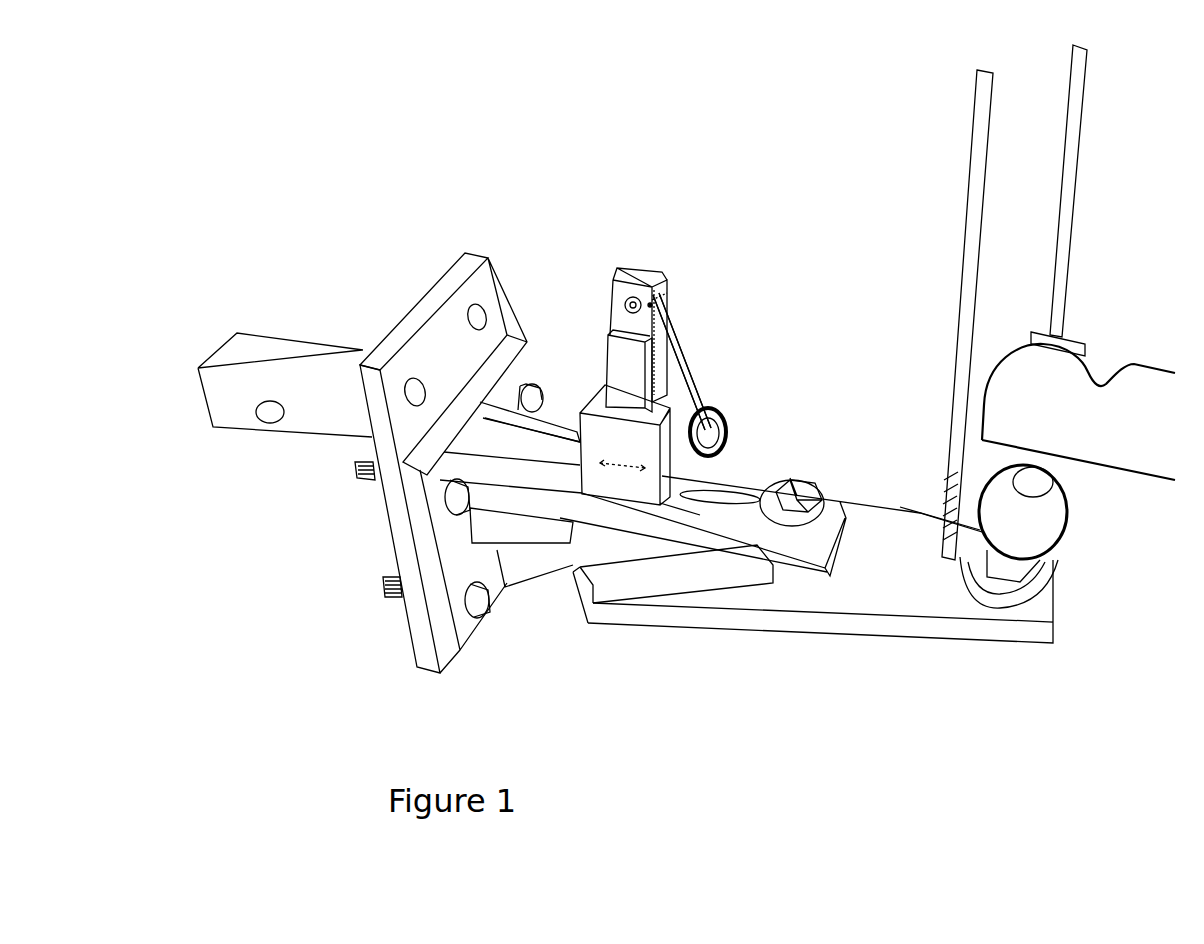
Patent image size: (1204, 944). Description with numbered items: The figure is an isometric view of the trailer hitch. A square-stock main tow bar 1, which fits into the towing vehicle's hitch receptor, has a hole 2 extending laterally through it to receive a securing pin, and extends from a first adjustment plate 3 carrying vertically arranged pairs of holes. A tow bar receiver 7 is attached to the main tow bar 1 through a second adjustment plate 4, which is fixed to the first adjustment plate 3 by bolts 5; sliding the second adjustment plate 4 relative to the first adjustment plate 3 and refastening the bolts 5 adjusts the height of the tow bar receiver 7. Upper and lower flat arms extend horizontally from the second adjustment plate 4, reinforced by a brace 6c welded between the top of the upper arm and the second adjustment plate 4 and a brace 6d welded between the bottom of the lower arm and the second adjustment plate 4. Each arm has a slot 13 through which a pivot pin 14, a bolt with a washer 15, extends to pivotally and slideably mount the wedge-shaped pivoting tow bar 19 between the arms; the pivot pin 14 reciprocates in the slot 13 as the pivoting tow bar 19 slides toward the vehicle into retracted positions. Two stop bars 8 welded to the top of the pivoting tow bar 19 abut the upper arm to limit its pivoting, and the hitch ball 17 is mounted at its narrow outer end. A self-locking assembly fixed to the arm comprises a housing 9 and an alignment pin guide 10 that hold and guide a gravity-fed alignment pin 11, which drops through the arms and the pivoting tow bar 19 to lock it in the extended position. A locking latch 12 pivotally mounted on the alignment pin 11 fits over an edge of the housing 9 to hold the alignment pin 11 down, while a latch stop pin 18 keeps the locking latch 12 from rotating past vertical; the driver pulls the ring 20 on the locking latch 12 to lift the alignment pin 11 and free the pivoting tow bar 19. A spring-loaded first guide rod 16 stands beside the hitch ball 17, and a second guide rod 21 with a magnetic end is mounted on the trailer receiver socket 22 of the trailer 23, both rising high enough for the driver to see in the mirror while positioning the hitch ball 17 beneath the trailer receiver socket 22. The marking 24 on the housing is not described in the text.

The main tow bar 1 is at (254, 330).
The hole 2 is at (270, 420).
The first adjustment plate 3 is at (472, 248).
The second adjustment plate 4 is at (515, 333).
The bolts 5 is at (474, 628).
The brace 6c is at (550, 418).
The brace 6d is at (522, 577).
The tow bar receiver 7 is at (552, 547).
The stop bars 8 is at (602, 595).
The housing 9 is at (649, 487).
The alignment pin guide 10 is at (622, 373).
The alignment pin 11 is at (648, 265).
The locking latch 12 is at (691, 378).
The slot 13 is at (728, 503).
The pivot pin 14 is at (797, 490).
The washer 15 is at (797, 527).
The first guide rod 16 is at (947, 427).
The hitch ball 17 is at (1075, 507).
The latch stop pin 18 is at (657, 296).
The pivoting tow bar 19 is at (917, 645).
The ring 20 is at (709, 405).
The second guide rod 21 is at (1053, 247).
The trailer receiver socket 22 is at (1092, 360).
The trailer 23 is at (1142, 362).
The indicator marking 24 is at (626, 482).